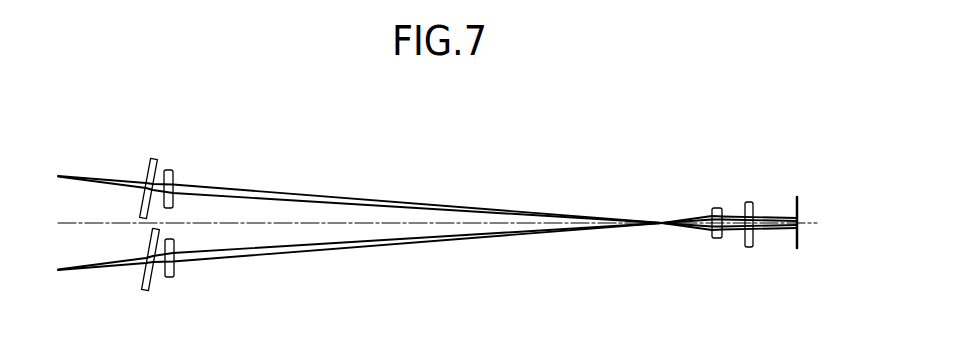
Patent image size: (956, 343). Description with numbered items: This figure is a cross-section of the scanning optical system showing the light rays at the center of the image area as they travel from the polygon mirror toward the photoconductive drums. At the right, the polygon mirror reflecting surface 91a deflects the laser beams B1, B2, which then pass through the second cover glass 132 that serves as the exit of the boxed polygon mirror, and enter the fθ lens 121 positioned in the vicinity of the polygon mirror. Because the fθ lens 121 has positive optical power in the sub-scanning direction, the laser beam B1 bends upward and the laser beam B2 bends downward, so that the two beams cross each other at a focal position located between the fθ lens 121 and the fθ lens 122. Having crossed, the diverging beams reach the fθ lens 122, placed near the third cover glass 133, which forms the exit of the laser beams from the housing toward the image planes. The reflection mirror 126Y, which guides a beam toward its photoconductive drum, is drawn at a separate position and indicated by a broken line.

The third cover glass 133 is at (153, 157).
The fθ lens 122 is at (167, 170).
The reflection mirror 126Y is at (500, 224).
The fθ lens 121 is at (718, 240).
The second cover glass 132 is at (748, 250).
The laser beam B1 is at (774, 233).
The laser beam B2 is at (775, 215).
The incident surface 91a is at (798, 249).